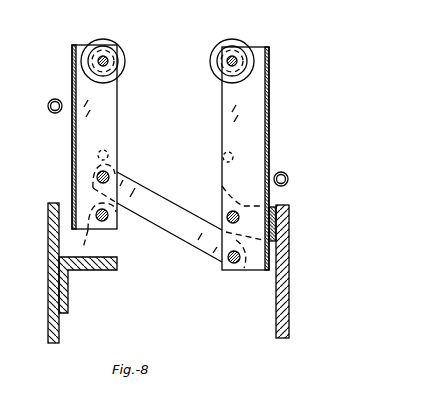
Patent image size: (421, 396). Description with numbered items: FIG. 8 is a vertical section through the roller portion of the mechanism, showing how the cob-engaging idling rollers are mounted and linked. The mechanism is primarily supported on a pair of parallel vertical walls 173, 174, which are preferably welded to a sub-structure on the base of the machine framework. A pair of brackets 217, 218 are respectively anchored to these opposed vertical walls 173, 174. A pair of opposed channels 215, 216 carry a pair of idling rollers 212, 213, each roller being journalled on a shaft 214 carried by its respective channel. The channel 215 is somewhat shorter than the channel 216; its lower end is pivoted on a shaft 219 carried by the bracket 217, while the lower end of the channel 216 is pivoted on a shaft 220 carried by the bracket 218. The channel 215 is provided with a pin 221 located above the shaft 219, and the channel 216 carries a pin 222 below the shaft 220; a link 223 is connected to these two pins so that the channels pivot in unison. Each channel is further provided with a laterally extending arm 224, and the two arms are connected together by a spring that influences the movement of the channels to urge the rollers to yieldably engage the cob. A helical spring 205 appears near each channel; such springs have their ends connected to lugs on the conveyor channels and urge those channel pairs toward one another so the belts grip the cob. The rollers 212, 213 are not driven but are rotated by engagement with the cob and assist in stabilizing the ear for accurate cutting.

The vertical wall 173 is at (59, 328).
The vertical wall 174 is at (289, 254).
The helical spring 205 is at (63, 97).
The idling roller 212 is at (120, 47).
The idling roller 213 is at (212, 56).
The shaft 214 is at (108, 62).
The channel 215 is at (80, 80).
The channel 216 is at (262, 124).
The bracket 217 is at (108, 252).
The bracket 218 is at (222, 187).
The shaft 219 is at (106, 216).
The shaft 220 is at (229, 215).
The pin 221 is at (106, 176).
The pin 222 is at (229, 258).
The link 223 is at (155, 193).
The laterally extending arm 224 is at (115, 150).